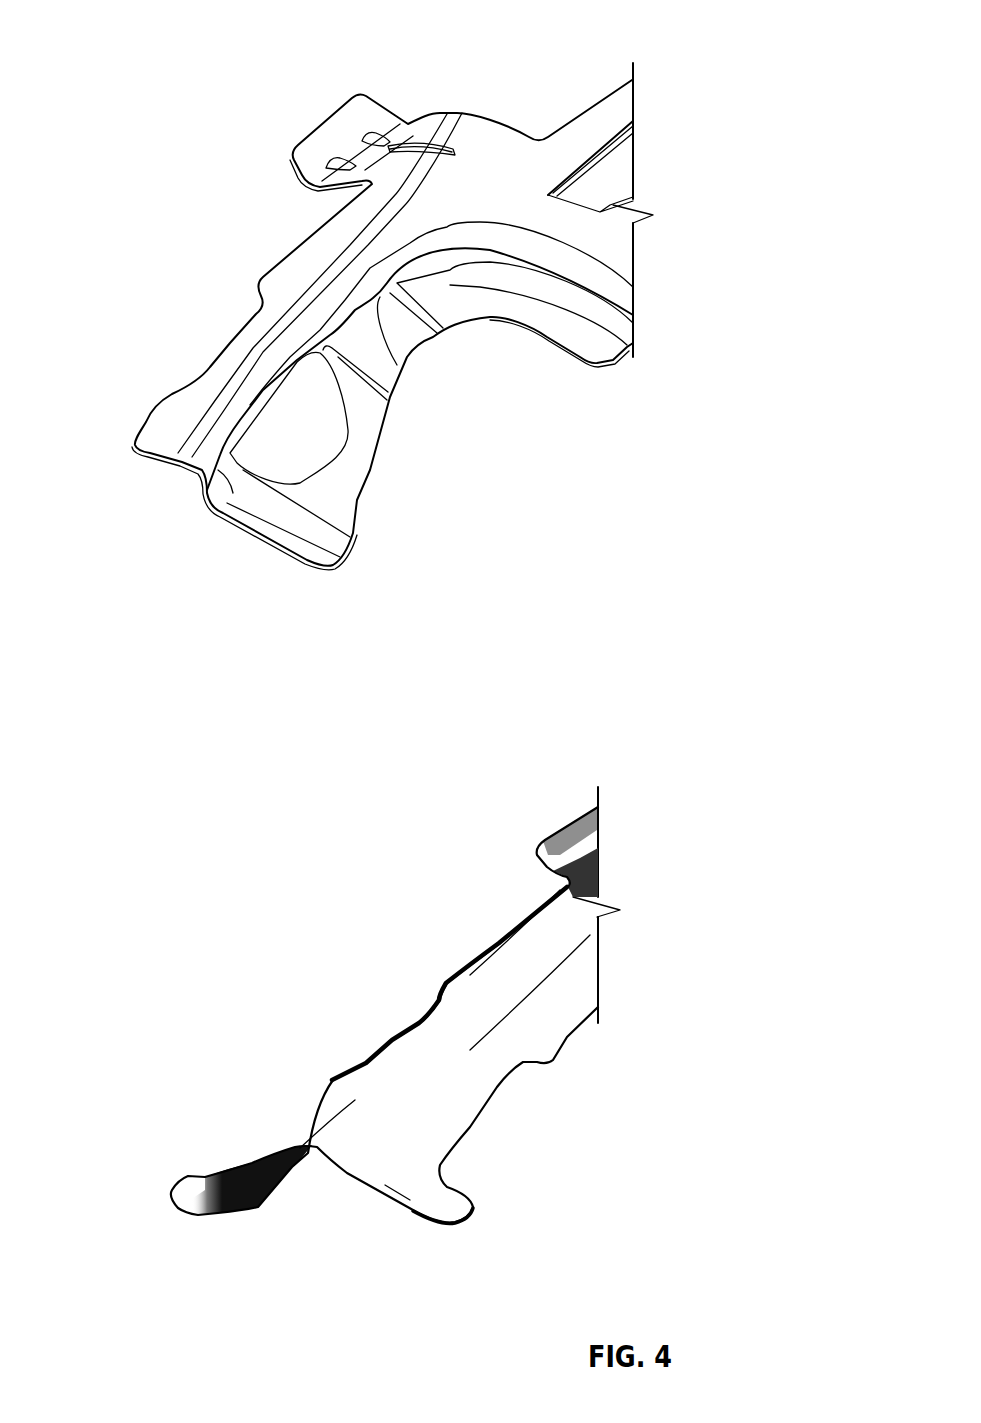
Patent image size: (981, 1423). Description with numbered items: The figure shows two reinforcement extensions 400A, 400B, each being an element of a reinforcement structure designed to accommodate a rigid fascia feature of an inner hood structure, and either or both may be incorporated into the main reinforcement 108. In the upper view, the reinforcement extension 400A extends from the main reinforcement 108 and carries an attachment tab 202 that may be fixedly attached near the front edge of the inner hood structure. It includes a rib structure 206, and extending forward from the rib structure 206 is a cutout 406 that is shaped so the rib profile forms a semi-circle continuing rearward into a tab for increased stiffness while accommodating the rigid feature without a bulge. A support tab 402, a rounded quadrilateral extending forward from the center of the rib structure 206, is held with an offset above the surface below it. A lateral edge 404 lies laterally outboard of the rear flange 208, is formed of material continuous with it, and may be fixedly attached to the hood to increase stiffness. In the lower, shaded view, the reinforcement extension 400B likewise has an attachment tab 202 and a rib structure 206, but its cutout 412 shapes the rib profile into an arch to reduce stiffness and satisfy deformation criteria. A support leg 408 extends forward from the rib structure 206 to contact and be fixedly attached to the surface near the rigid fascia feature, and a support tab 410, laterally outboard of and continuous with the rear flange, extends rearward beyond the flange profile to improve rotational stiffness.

The reinforcement extension 400A is at (135, 46).
The reinforcement extension 400B is at (285, 742).
The attachment tab 202 is at (306, 137).
The main reinforcement 108 is at (587, 182).
The rib structure 206 is at (300, 360).
The cutout 406 is at (212, 368).
The support tab 402 is at (153, 437).
The rear flange 208 is at (350, 477).
The lateral edge 404 is at (263, 537).
The cutout 412 is at (385, 1055).
The support leg 408 is at (215, 1190).
The support tab 410 is at (397, 1175).